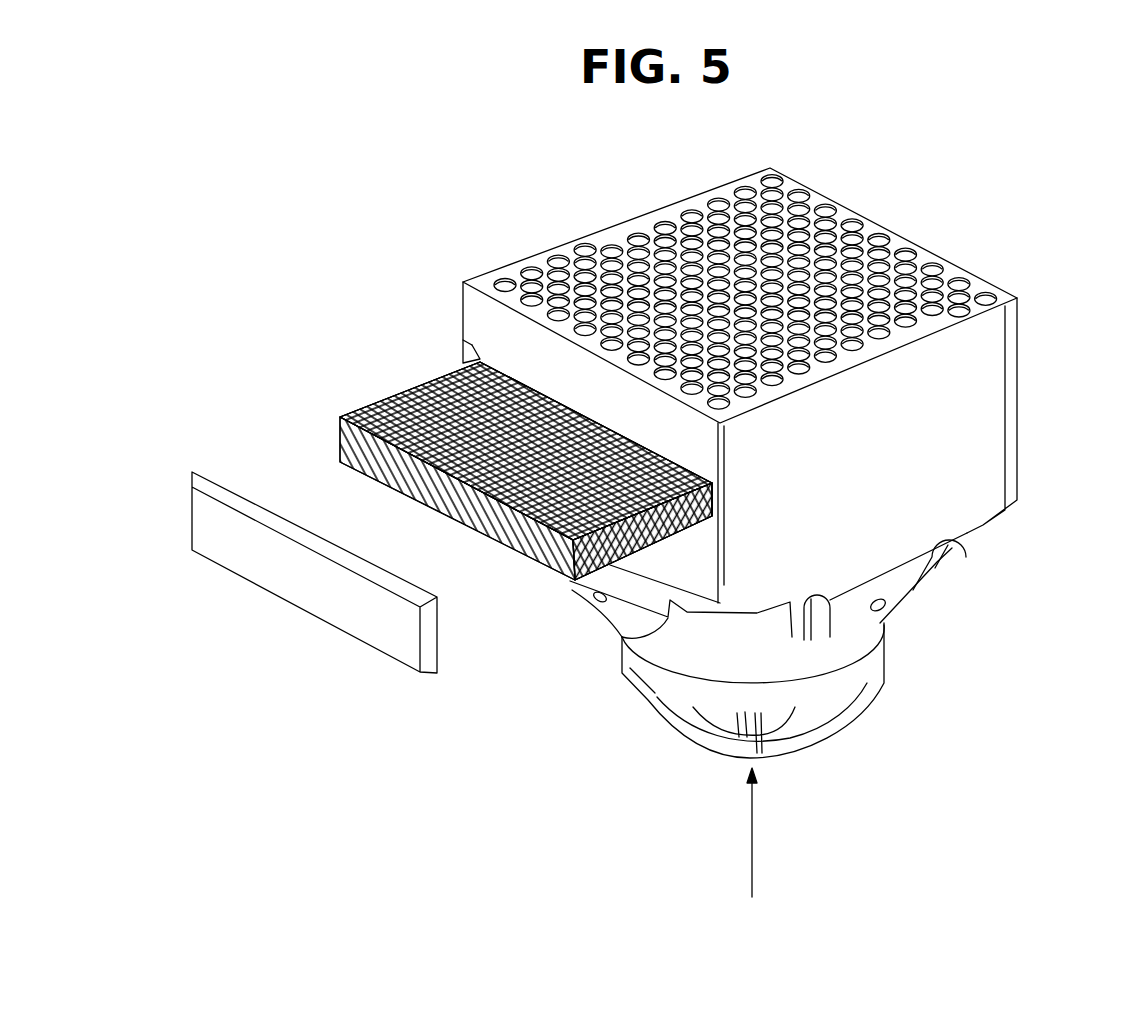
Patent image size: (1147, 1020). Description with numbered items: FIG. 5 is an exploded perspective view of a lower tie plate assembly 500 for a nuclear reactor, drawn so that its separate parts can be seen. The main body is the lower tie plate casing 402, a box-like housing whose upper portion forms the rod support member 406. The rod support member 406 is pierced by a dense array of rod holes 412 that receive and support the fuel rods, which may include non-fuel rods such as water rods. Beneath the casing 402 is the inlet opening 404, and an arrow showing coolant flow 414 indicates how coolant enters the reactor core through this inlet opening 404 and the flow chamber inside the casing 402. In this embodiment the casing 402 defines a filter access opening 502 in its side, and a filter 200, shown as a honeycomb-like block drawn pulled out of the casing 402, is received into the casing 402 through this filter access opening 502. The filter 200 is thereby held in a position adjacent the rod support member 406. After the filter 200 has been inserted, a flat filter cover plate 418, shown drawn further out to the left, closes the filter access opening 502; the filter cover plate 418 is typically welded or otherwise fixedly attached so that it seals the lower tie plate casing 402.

The lower tie plate assembly 500 is at (847, 147).
The lower tie plate casing 402 is at (1012, 355).
The rod support member 406 is at (963, 270).
The rod holes 412 is at (868, 236).
The filter access opening 502 is at (482, 352).
The filter 200 is at (398, 395).
The filter cover plate 418 is at (437, 630).
The inlet opening 404 is at (800, 725).
The coolant flow 414 is at (753, 857).